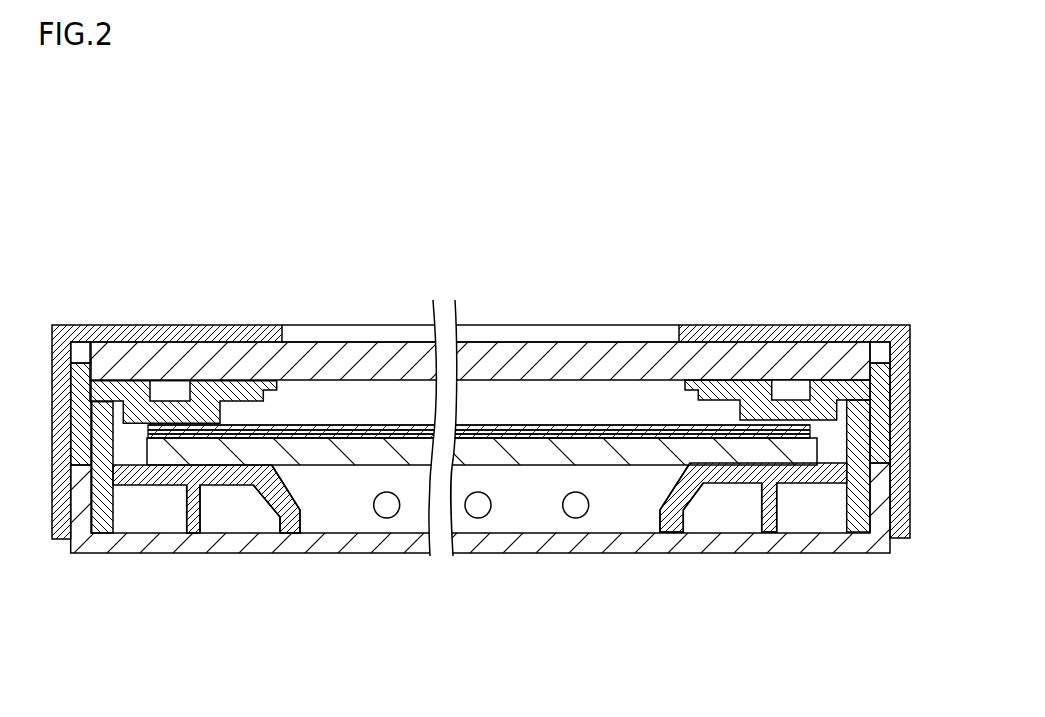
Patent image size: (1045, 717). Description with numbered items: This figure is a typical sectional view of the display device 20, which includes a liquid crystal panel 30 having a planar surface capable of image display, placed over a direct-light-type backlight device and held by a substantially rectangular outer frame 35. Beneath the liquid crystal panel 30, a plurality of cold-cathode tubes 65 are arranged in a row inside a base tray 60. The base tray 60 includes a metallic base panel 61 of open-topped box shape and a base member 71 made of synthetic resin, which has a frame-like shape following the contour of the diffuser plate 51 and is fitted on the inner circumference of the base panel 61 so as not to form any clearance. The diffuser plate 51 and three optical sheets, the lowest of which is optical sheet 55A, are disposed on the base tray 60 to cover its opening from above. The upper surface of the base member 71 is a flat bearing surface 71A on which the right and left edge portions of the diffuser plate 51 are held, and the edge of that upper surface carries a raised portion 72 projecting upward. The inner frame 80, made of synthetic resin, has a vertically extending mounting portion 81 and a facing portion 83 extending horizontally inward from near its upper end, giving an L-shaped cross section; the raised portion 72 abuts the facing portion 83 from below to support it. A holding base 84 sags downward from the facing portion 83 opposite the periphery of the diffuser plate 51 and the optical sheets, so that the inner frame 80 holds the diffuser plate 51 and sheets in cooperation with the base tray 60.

The display device 20 is at (312, 197).
The liquid crystal panel 30 is at (563, 353).
The outer frame 35 is at (181, 333).
The diffuser plate 51 is at (307, 453).
The optical sheet 55A is at (358, 405).
The base tray 60 is at (640, 655).
The base panel 61 is at (612, 545).
The cold-cathode tubes 65 is at (386, 510).
The base member 71 is at (160, 477).
The bearing surface 71A is at (238, 465).
The raised portion 72 is at (863, 438).
The inner frame 80 is at (108, 388).
The mounting portion 81 is at (883, 410).
The facing portion 83 is at (718, 392).
The holding base 84 is at (791, 407).